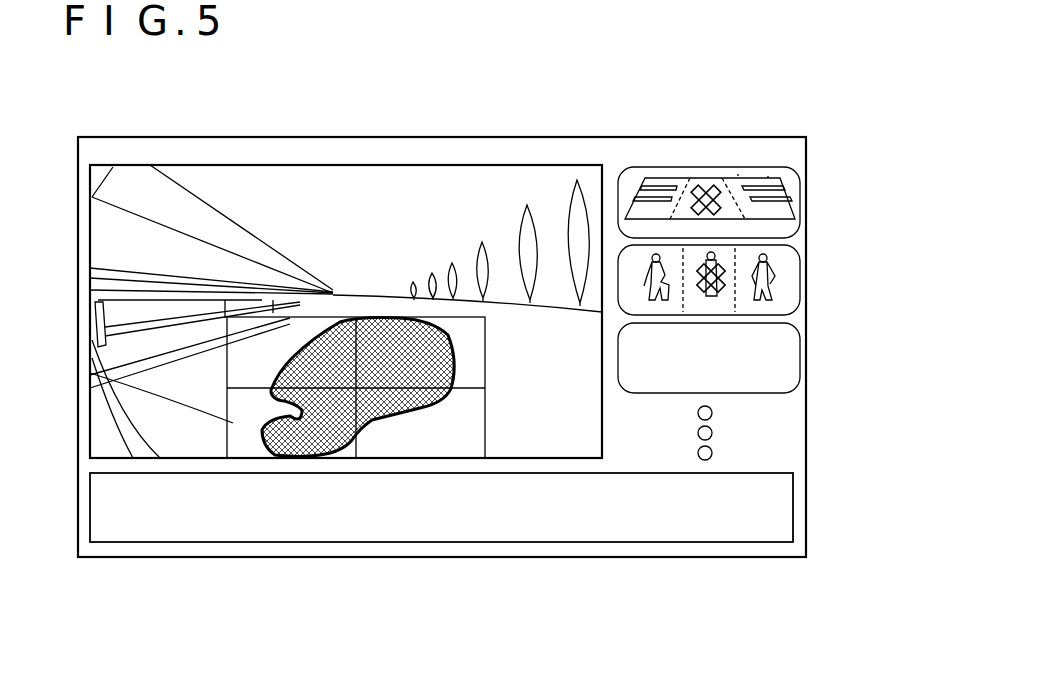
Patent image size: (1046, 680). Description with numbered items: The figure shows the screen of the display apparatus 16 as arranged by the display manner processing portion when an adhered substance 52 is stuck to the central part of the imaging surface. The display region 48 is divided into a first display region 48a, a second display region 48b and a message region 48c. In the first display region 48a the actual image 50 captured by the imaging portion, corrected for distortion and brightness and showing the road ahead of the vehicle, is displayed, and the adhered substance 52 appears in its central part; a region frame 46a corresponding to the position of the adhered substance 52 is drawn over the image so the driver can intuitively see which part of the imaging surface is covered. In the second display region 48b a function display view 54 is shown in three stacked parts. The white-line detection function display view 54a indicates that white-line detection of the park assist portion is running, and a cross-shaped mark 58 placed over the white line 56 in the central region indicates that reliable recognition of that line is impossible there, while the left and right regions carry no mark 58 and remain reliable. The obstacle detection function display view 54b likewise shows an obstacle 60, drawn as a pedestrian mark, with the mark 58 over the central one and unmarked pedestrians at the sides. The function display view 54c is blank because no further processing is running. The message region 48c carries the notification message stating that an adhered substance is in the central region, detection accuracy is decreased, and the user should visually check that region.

The display apparatus 16 is at (99, 138).
The display region 48 is at (697, 89).
The first display region 48a is at (571, 165).
The second display region 48b is at (668, 166).
The message region 48c is at (770, 545).
The actual image 50 is at (266, 183).
The adhered substance 52 is at (370, 330).
The region 46a is at (92, 383).
The function display view 54 is at (856, 172).
The white-line detection function display view 54a is at (790, 190).
The obstacle detection function display view 54b is at (790, 268).
The function display view 54c is at (790, 338).
The white line 56 is at (738, 174).
The mark 58 is at (728, 180).
The obstacle 60 is at (722, 293).